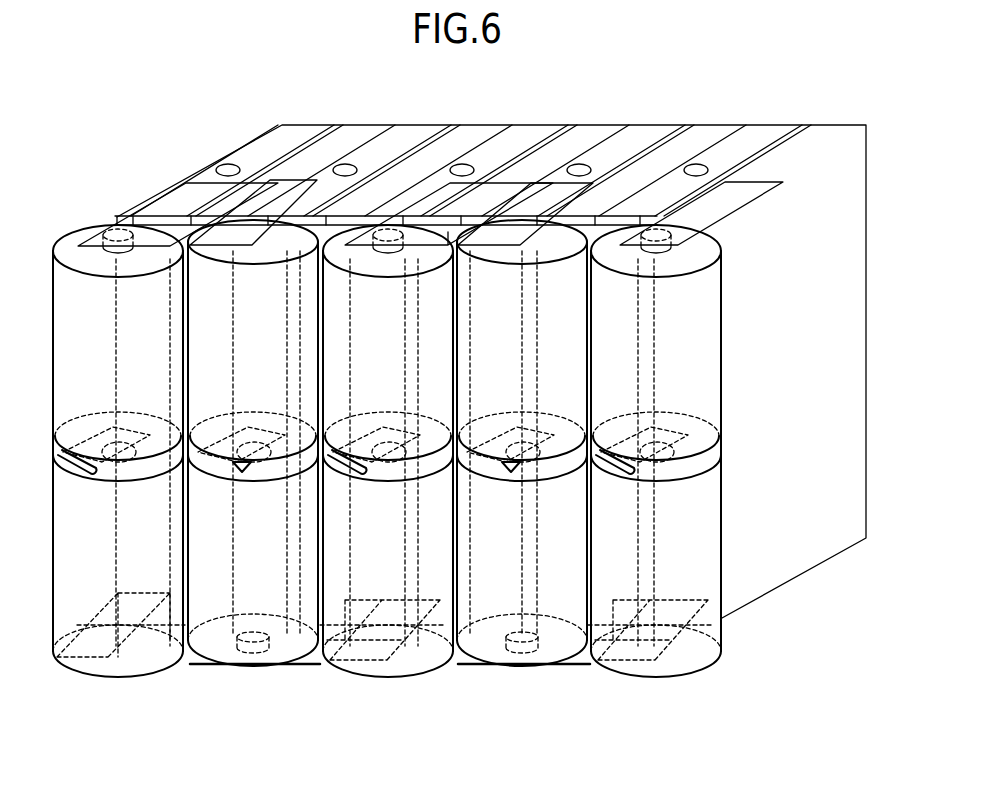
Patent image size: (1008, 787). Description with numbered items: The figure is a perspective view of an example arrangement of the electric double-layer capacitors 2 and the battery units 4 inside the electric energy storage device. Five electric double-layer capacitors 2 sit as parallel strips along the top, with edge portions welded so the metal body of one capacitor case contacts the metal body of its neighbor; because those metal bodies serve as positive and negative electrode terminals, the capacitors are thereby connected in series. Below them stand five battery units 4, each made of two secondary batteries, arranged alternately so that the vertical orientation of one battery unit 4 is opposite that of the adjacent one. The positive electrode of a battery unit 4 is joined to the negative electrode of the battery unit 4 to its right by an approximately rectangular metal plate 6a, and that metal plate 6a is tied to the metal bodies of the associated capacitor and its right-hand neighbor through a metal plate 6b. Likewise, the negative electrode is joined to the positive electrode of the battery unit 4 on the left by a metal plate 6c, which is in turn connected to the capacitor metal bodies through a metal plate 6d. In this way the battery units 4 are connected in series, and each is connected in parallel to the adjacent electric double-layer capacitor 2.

The electric double-layer capacitor 2 is at (345, 102).
The battery unit 4 is at (114, 698).
The metal plate 6a is at (143, 252).
The metal plate 6b is at (468, 185).
The metal plate 6c is at (357, 680).
The metal plate 6d is at (156, 595).